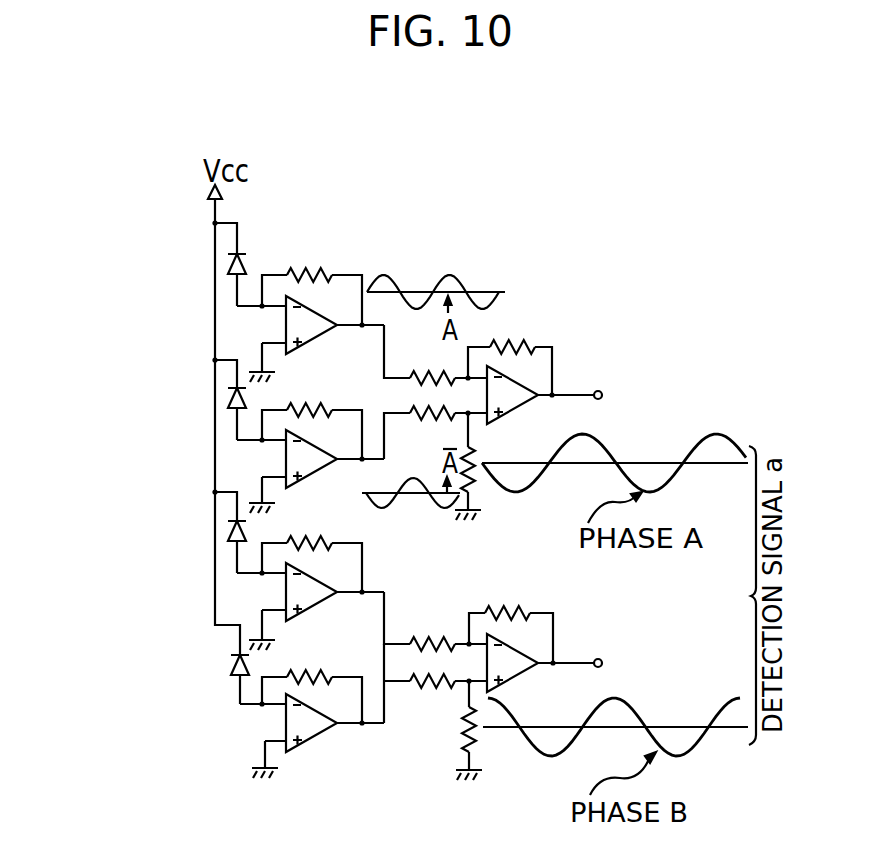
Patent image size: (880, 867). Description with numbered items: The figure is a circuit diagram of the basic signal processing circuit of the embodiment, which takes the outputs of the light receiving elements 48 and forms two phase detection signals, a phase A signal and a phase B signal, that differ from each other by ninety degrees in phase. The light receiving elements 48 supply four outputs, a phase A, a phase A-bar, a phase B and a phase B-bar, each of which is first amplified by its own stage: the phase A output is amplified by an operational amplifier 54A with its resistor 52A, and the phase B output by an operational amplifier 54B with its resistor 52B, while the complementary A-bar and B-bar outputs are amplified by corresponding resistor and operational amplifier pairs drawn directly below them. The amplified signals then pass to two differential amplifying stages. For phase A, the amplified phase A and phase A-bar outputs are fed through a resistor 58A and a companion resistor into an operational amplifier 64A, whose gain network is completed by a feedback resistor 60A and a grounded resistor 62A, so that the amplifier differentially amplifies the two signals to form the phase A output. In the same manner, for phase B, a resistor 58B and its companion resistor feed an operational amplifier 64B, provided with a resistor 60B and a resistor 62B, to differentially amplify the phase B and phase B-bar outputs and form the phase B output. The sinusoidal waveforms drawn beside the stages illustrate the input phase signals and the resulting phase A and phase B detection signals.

The light receiving elements 48 is at (232, 266).
The resistor 52A is at (291, 275).
The operational amplifier 54A is at (312, 339).
The resistor 52B is at (337, 540).
The operational amplifier 54B is at (320, 602).
The resistor 58A is at (443, 376).
The resistor 60A is at (505, 346).
The resistor 62A is at (473, 487).
The operational amplifier 64A is at (528, 402).
The resistor 58B is at (431, 641).
The resistor 60B is at (507, 612).
The resistor 62B is at (478, 733).
The operational amplifier 64B is at (518, 672).